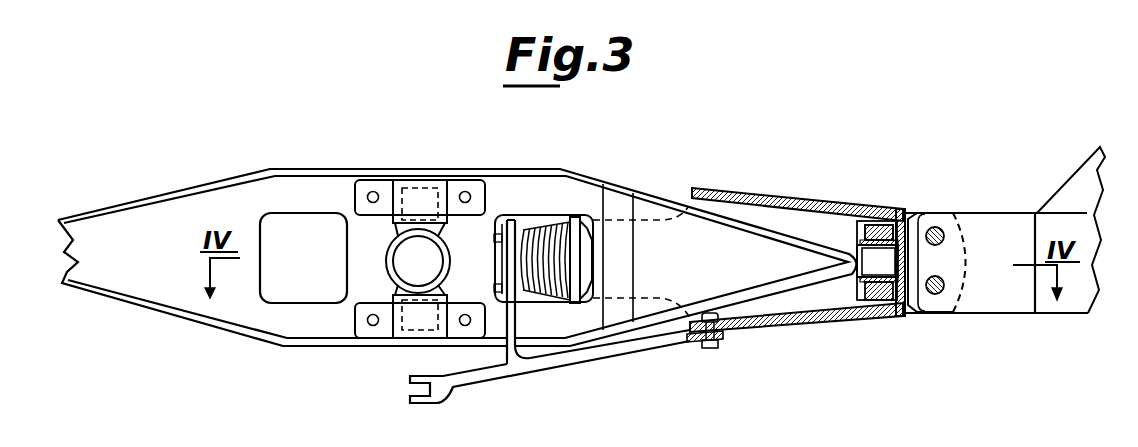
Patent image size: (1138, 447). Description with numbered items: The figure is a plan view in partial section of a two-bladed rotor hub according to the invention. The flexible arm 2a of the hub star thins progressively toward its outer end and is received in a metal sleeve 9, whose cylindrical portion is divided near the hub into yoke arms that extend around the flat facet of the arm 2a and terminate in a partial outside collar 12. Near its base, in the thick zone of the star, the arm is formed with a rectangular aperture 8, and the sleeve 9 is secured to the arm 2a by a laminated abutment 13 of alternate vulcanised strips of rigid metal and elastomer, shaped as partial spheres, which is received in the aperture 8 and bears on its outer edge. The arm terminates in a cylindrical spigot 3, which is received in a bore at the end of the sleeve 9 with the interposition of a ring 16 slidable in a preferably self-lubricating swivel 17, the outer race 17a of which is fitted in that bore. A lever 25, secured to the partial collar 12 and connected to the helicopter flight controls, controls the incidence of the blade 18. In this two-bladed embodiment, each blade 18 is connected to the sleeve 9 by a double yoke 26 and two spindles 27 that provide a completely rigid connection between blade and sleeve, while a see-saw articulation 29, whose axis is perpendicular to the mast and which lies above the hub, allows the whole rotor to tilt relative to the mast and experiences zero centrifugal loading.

The flexible outside part of arm 2a is at (773, 285).
The cylindrical spigot 3 is at (872, 258).
The rectangular aperture 8 is at (287, 303).
The metal sleeve 9 is at (797, 198).
The partial outside collar 12 is at (522, 220).
The laminated abutment 13 is at (548, 228).
The ring 16 is at (851, 232).
The self-lubricating swivel 17 is at (883, 300).
The outer race of swivel 17a is at (882, 230).
The blade 18 is at (1068, 193).
The lever 25 is at (517, 327).
The double yoke 26 is at (945, 210).
The spindles 27 is at (942, 283).
The articulation 29 is at (419, 200).